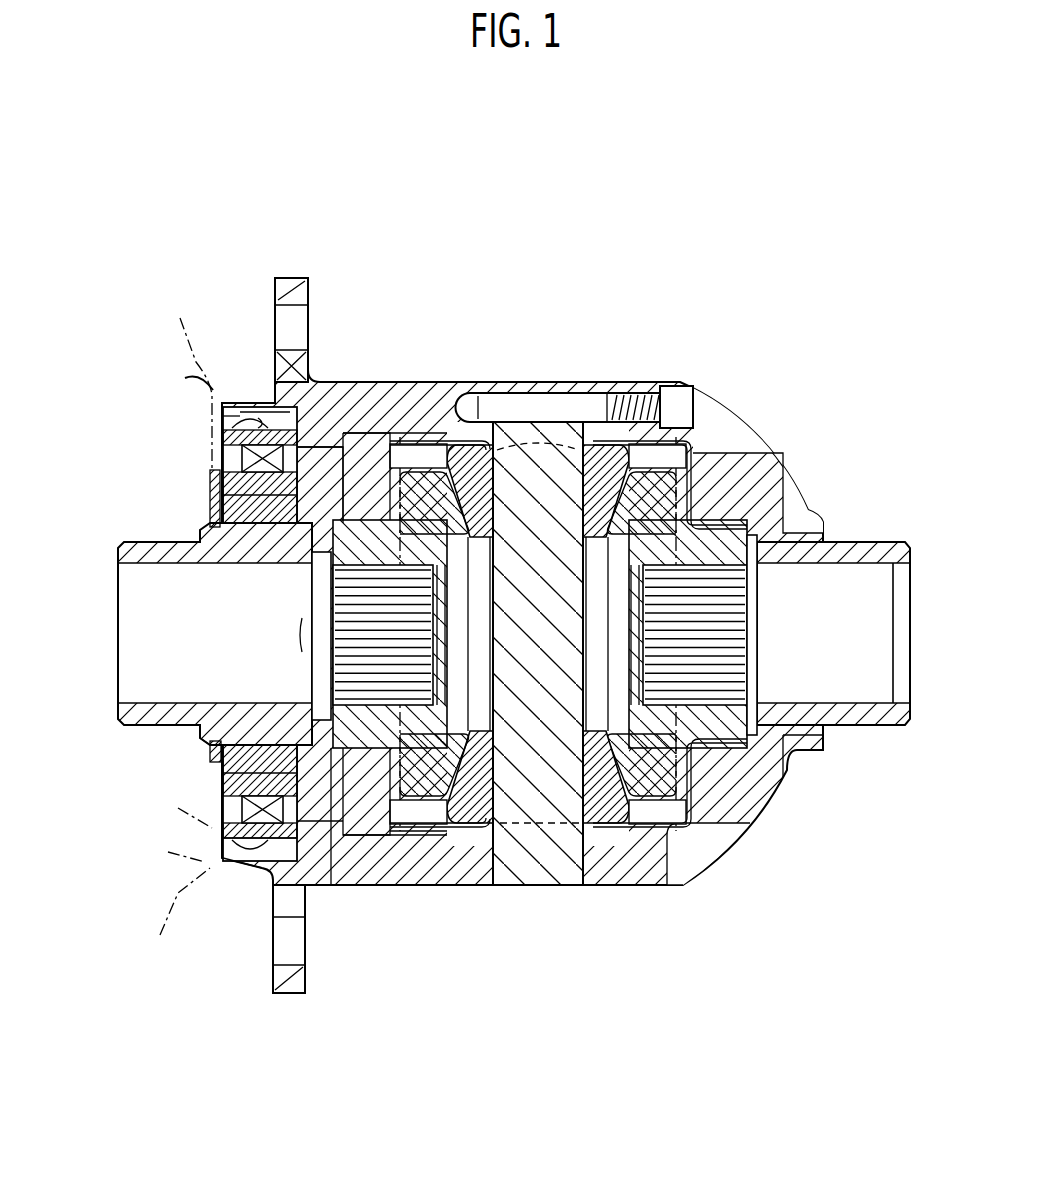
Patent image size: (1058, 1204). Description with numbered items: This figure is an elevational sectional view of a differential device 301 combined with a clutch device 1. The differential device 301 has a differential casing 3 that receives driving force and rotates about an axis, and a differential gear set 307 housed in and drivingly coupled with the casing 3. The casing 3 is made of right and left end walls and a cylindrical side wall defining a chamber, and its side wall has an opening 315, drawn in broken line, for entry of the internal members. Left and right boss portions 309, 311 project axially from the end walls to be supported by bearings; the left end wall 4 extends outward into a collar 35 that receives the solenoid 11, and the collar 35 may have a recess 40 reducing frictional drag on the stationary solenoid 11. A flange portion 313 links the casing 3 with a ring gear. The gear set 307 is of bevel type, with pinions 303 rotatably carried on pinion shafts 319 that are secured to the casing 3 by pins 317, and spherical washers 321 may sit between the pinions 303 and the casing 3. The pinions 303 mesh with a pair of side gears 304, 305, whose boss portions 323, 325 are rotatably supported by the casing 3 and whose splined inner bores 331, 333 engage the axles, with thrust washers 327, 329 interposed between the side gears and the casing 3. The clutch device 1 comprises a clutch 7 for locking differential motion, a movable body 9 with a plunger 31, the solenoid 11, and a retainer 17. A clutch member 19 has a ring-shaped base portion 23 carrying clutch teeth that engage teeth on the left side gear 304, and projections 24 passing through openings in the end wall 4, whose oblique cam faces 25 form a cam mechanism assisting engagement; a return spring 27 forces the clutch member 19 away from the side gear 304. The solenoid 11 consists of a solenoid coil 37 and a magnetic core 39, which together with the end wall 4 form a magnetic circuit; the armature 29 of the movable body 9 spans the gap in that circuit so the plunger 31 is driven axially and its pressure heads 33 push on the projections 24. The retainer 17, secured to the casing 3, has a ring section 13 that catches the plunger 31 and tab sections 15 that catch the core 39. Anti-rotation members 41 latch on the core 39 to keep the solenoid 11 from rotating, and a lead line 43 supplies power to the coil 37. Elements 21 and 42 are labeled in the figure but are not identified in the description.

The clutch device 1 is at (296, 248).
The differential casing 3 is at (363, 880).
The left end wall 4 is at (212, 752).
The clutch 7 is at (378, 382).
The movable body 9 is at (256, 530).
The solenoid 11 is at (220, 792).
The ring section 13 is at (205, 756).
The tab sections 15 is at (212, 487).
The retainer 17 is at (197, 510).
The clutch member 19 is at (350, 872).
The housing inner surface 21 is at (378, 830).
The ring-shaped base portion 23 is at (396, 470).
The projections 24 is at (288, 372).
The oblique cam faces 25 is at (315, 458).
The return spring 27 is at (372, 745).
The armature 29 is at (233, 771).
The plunger 31 is at (212, 742).
The pressure heads 33 is at (302, 522).
The collar 35 is at (256, 410).
The solenoid coil 37 is at (265, 840).
The magnetic core 39 is at (228, 853).
The recess 40 is at (222, 418).
The anti-rotation members 41 is at (177, 628).
The seal lip 42 is at (232, 405).
The lead line 43 is at (191, 891).
The differential device 301 is at (540, 196).
The pinions 303 is at (605, 802).
The left side gear 304 is at (420, 788).
The right side gear 305 is at (650, 782).
The differential gear set 307 is at (567, 905).
The left boss portion 309 is at (135, 550).
The right boss portion 311 is at (882, 552).
The flange portion 313 is at (292, 995).
The opening 315 is at (522, 420).
The pins 317 is at (566, 410).
The pinion shafts 319 is at (523, 877).
The spherical washers 321 is at (462, 818).
The boss portion 323 is at (438, 440).
The boss portion 325 is at (735, 550).
The thrust washer 327 is at (308, 755).
The thrust washer 329 is at (703, 503).
The splined inner bore 331 is at (350, 647).
The splined inner bore 333 is at (732, 638).